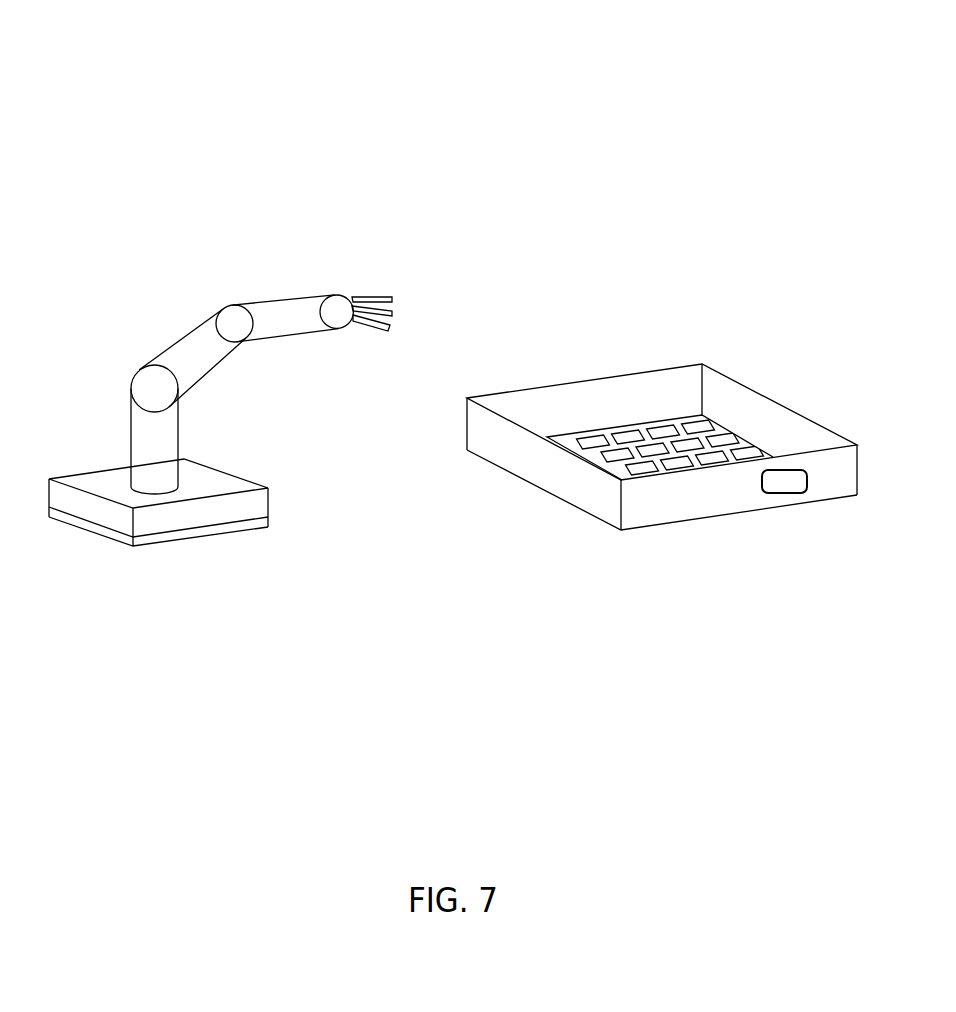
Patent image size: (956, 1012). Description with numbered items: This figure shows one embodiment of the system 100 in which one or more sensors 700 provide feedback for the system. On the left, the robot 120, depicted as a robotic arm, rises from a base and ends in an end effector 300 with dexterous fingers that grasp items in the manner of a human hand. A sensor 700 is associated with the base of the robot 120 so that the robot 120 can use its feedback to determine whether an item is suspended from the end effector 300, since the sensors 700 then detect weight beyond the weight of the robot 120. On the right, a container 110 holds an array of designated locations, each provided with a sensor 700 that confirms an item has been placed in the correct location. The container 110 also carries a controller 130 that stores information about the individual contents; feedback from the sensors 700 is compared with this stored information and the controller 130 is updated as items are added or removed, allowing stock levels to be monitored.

The system 100 is at (246, 94).
The container 110 is at (717, 502).
The robot 120 is at (232, 488).
The controller 130 is at (792, 492).
The end effector 300 is at (365, 300).
The sensors 700 is at (622, 430).